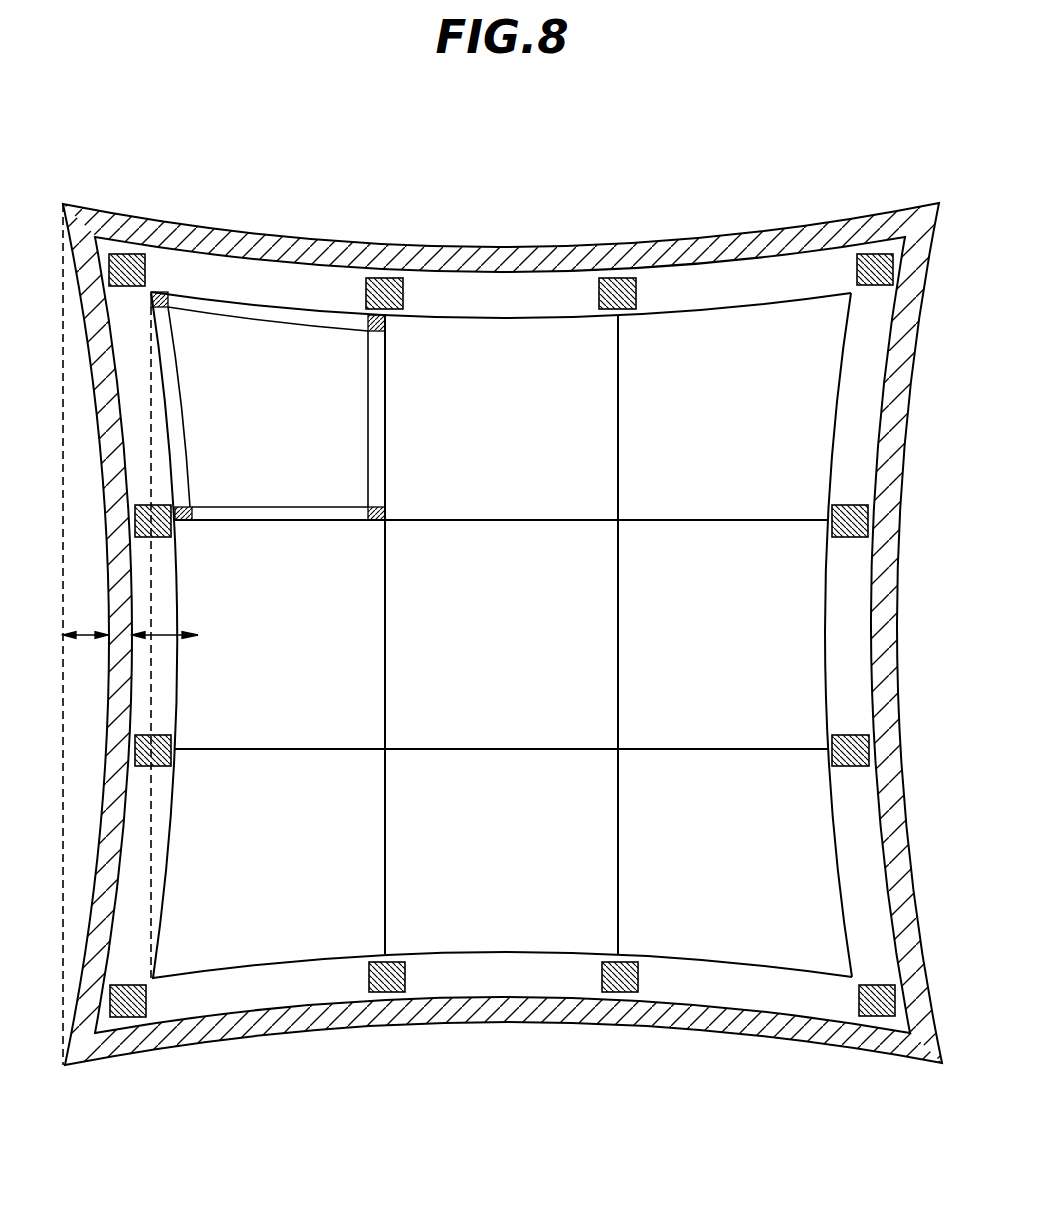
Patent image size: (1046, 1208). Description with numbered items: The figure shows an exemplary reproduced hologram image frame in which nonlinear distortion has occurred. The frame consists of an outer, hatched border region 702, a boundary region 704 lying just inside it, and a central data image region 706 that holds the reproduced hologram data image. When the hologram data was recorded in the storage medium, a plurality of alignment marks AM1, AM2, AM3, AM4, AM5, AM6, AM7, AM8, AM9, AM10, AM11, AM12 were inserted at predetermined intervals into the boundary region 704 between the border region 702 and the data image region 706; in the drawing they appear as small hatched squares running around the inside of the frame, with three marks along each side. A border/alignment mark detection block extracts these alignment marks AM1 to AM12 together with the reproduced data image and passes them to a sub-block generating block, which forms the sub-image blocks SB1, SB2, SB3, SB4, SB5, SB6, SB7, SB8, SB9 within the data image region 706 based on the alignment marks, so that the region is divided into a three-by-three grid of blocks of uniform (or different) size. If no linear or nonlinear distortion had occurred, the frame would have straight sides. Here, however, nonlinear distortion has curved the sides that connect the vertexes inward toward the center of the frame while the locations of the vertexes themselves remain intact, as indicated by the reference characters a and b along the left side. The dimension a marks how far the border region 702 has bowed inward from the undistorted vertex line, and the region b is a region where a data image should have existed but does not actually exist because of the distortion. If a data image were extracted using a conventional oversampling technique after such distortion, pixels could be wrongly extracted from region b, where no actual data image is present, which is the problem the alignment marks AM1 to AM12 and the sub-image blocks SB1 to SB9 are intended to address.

The border region 702 is at (767, 236).
The boundary region 704 is at (298, 283).
The data image region 706 is at (520, 318).
The sub-image block SB1 is at (268, 406).
The sub-image block SB2 is at (501, 417).
The sub-image block SB3 is at (723, 456).
The sub-image block SB4 is at (279, 634).
The sub-image block SB5 is at (501, 634).
The sub-image block SB6 is at (723, 684).
The sub-image block SB7 is at (314, 851).
The sub-image block SB8 is at (547, 851).
The sub-image block SB9 is at (781, 635).
The alignment mark AM1 is at (145, 270).
The alignment mark AM2 is at (403, 293).
The alignment mark AM3 is at (636, 293).
The alignment mark AM4 is at (857, 270).
The alignment mark AM5 is at (852, 505).
The alignment mark AM6 is at (849, 735).
The alignment mark AM7 is at (873, 985).
The alignment mark AM8 is at (638, 977).
The alignment mark AM9 is at (405, 977).
The alignment mark AM10 is at (146, 1000).
The alignment mark AM11 is at (150, 735).
The alignment mark AM12 is at (150, 505).
The nonlinearly curved side region a is at (85, 624).
The missing data image region b is at (165, 624).